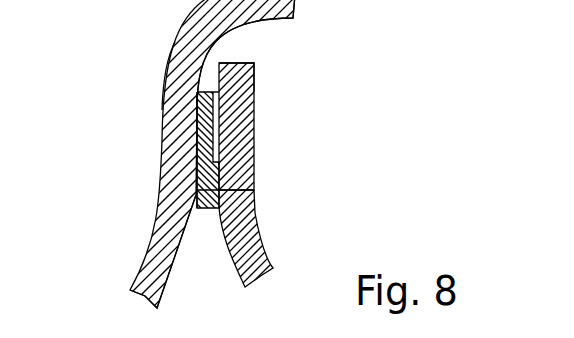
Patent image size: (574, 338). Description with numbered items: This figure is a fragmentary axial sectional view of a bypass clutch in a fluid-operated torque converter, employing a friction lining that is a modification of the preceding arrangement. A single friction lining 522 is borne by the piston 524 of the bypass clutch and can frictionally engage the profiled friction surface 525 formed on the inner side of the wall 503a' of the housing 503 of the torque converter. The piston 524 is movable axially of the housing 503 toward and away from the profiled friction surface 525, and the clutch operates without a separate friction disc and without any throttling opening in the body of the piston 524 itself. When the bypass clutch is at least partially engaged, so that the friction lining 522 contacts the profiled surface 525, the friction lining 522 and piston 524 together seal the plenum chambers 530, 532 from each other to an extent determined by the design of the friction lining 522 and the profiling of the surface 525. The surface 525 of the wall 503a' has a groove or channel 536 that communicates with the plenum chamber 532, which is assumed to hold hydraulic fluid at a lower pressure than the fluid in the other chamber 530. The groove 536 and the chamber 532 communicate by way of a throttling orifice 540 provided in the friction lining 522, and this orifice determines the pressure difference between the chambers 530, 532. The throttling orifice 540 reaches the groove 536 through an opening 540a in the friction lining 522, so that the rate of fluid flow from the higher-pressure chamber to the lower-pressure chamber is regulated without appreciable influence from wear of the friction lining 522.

The housing 503 is at (162, 247).
The wall 503a' is at (113, 70).
The plenum chamber 530 is at (305, 55).
The plenum chamber 532 is at (233, 302).
The piston 524 is at (252, 108).
The throttling orifice 540 is at (253, 88).
The opening 540a is at (210, 138).
The friction lining 522 is at (210, 195).
The groove 536 is at (205, 167).
The profiled friction surface 525 is at (197, 123).